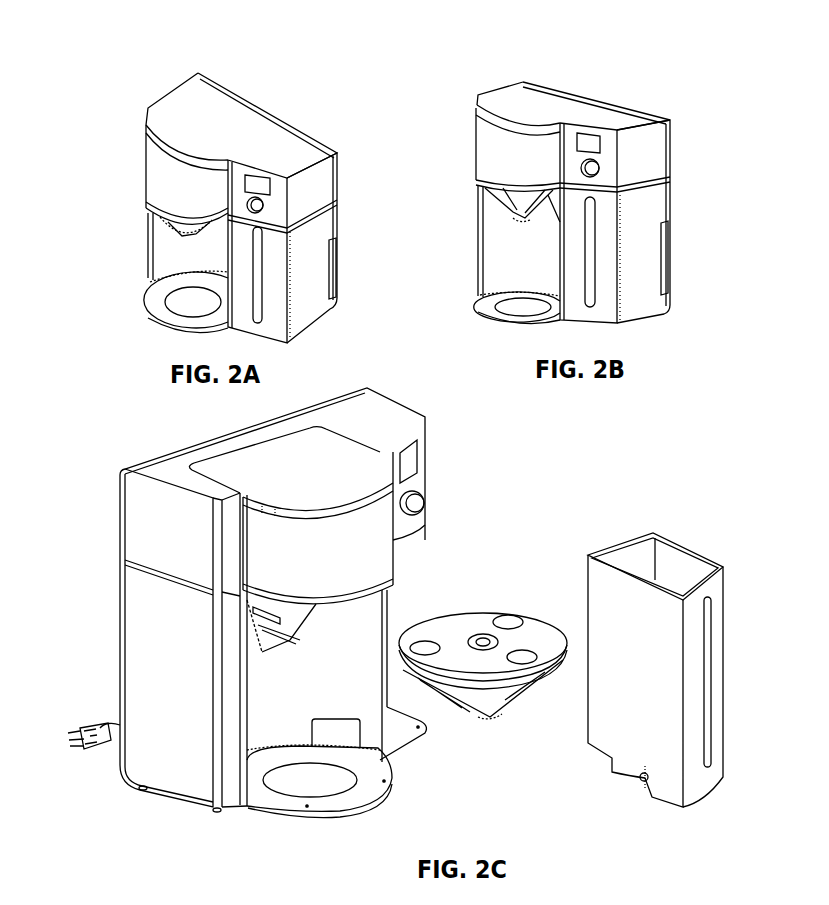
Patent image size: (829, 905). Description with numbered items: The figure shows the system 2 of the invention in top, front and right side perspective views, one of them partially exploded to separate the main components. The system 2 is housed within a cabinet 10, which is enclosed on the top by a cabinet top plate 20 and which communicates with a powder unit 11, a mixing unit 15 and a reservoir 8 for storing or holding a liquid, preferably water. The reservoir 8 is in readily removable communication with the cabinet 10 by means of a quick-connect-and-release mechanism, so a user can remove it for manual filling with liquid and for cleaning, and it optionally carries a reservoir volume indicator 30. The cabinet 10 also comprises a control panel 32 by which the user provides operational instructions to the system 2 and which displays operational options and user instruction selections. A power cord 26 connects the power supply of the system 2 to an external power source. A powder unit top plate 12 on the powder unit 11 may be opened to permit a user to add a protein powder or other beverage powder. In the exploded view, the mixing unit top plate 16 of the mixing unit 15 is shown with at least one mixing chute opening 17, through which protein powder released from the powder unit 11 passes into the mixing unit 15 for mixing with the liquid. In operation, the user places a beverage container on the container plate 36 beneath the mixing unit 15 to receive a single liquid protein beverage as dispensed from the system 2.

In FIG. 2A, the system 2 is at (115, 98).
In FIG. 2B, the system 2 is at (487, 72).
In FIG. 2C, the system 2 is at (80, 477).
In FIG. 2A, the reservoir 8 is at (313, 267).
In FIG. 2B, the reservoir 8 is at (637, 242).
In FIG. 2C, the reservoir 8 is at (695, 545).
In FIG. 2A, the cabinet 10 is at (277, 110).
In FIG. 2B, the cabinet 10 is at (643, 107).
In FIG. 2C, the cabinet 10 is at (127, 527).
In FIG. 2A, the powder unit 11 is at (148, 183).
In FIG. 2B, the powder unit 11 is at (507, 147).
In FIG. 2C, the powder unit 11 is at (367, 553).
In FIG. 2C, the powder unit top plate 12 is at (310, 463).
In FIG. 2A, the mixing unit 15 is at (177, 227).
In FIG. 2B, the mixing unit 15 is at (518, 204).
In FIG. 2C, the mixing unit 15 is at (493, 700).
In FIG. 2C, the mixing unit top plate 16 is at (442, 617).
In FIG. 2C, the mixing chute opening 17 is at (430, 645).
In FIG. 2C, the cabinet top plate 20 is at (372, 418).
In FIG. 2C, the power cord 26 is at (62, 742).
In FIG. 2C, the reservoir volume indicator 30 is at (710, 722).
In FIG. 2A, the control panel 32 is at (283, 195).
In FIG. 2B, the control panel 32 is at (612, 155).
In FIG. 2C, the control panel 32 is at (428, 465).
In FIG. 2A, the container plate 36 is at (160, 312).
In FIG. 2B, the container plate 36 is at (507, 313).
In FIG. 2C, the container plate 36 is at (288, 802).